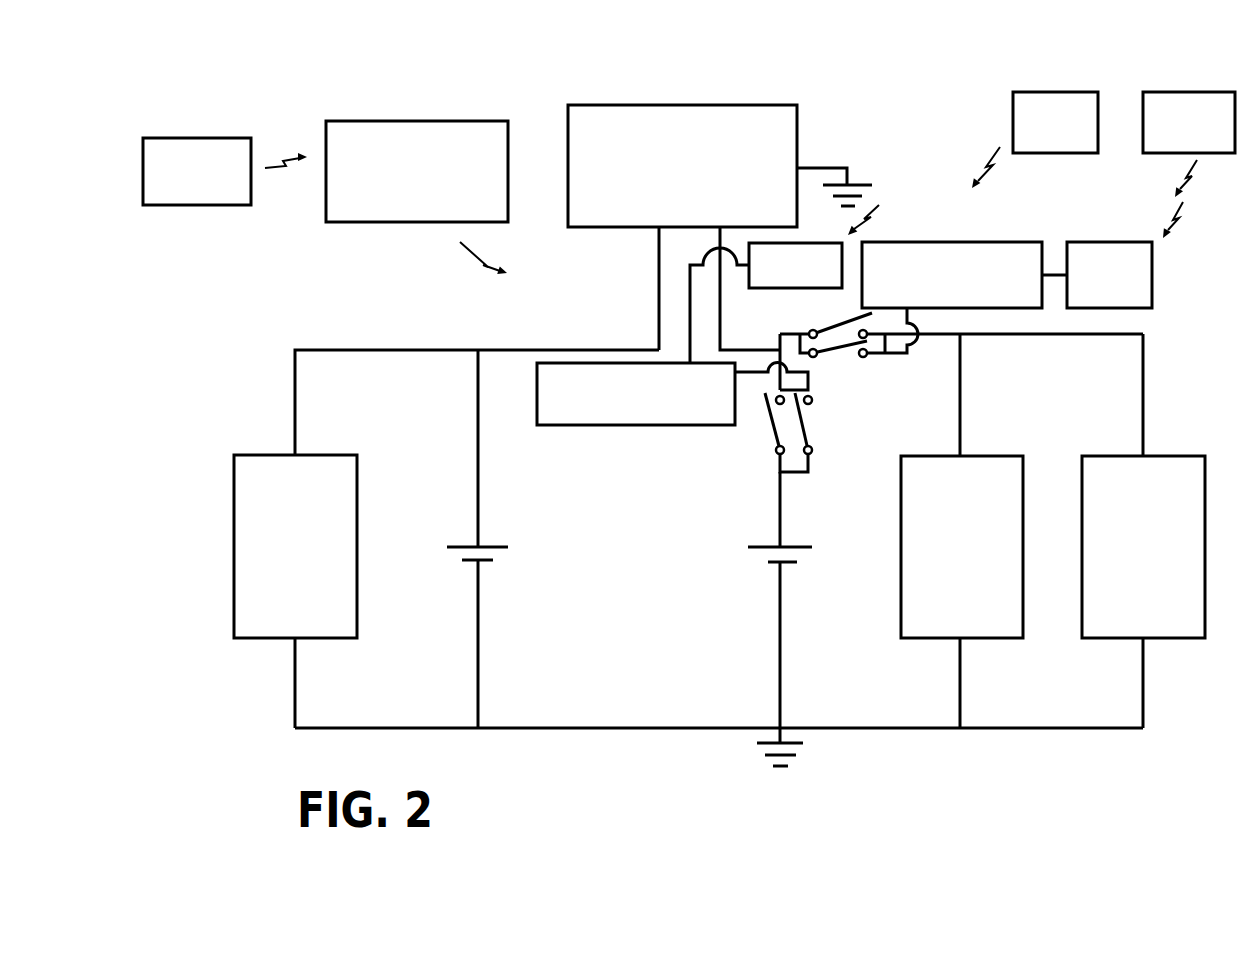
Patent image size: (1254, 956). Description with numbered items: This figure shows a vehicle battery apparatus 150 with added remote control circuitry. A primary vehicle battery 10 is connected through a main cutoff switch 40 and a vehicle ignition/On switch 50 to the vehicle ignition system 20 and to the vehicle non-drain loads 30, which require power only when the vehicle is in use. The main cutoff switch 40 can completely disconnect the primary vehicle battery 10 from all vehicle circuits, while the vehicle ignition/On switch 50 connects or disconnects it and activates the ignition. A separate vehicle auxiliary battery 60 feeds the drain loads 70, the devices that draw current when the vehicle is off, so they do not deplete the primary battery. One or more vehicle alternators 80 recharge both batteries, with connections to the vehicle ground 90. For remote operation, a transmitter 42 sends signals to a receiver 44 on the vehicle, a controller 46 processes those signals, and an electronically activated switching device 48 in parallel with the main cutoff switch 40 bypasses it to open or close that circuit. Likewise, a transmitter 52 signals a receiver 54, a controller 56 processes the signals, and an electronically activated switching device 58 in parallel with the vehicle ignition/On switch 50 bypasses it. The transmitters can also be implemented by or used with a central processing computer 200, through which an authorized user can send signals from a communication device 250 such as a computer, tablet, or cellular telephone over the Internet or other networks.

The primary vehicle battery 10 is at (797, 542).
The vehicle ignition system 20 is at (987, 455).
The vehicle non-drain loads 30 is at (1175, 455).
The main cutoff switch 40 is at (767, 425).
The transmitter 42 is at (1060, 90).
The receiver 44 is at (793, 289).
The controller 46 is at (600, 425).
The electronically activated switching device 48 is at (810, 425).
The vehicle ignition/On switch 50 is at (837, 323).
The transmitter 52 is at (1190, 90).
The receiver 54 is at (1153, 275).
The controller 56 is at (997, 242).
The electronically activated switching device 58 is at (842, 361).
The vehicle auxiliary battery 60 is at (492, 543).
The drain loads 70 is at (234, 530).
The vehicle alternator 80 is at (627, 228).
The vehicle ground 90 is at (863, 183).
The vehicle electrical system 150 is at (252, 690).
The central processing computer 200 is at (427, 121).
The communication device 250 is at (200, 138).